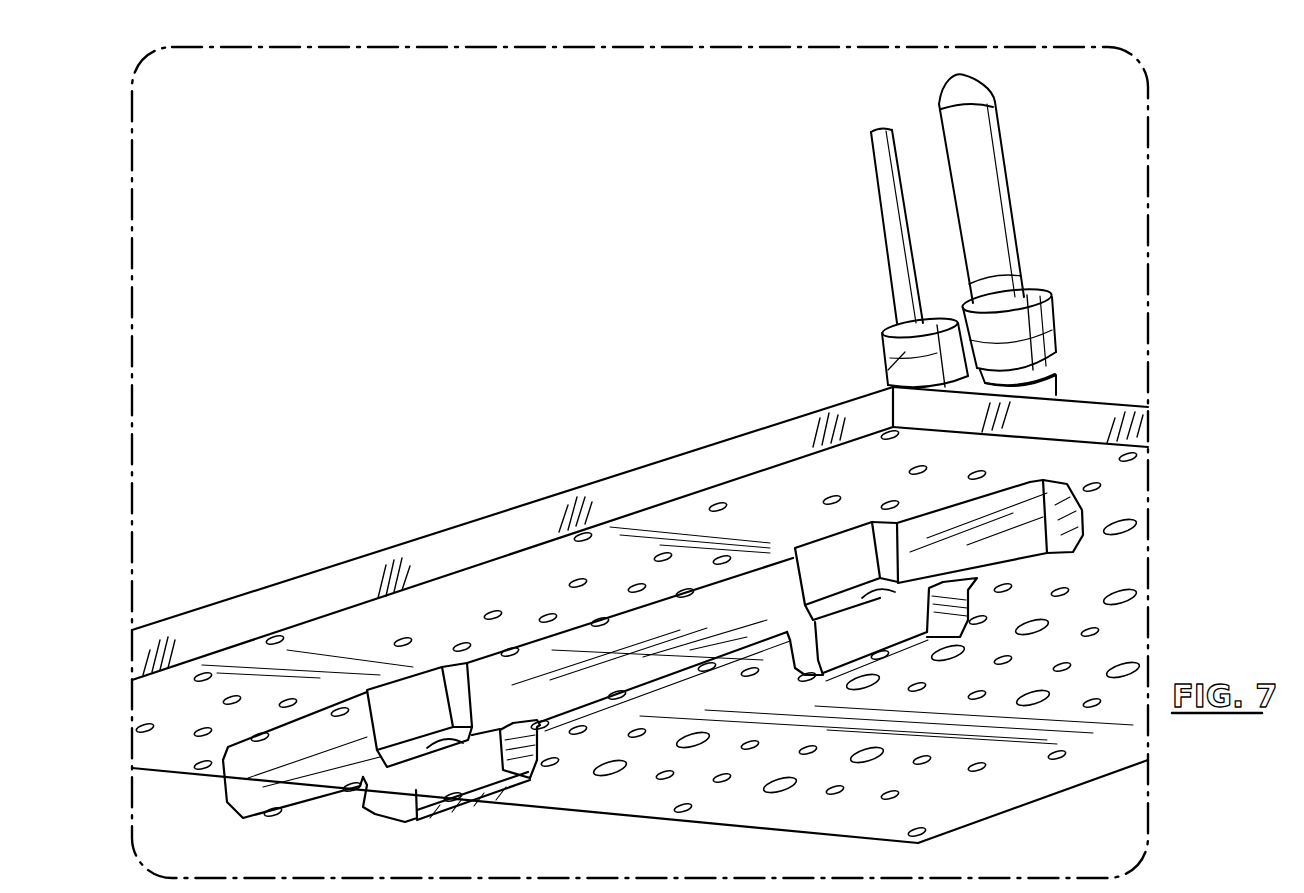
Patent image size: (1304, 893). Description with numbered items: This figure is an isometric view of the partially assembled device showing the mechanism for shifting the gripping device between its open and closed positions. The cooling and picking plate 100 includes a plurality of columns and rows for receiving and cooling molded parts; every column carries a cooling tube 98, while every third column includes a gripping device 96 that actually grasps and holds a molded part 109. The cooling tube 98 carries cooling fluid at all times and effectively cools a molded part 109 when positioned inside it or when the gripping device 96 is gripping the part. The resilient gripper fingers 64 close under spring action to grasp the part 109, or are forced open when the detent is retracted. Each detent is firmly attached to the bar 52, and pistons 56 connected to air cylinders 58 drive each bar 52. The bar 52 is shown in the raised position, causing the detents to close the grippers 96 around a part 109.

The plate 100 is at (530, 518).
The cooling tube 98 is at (886, 172).
The molded part 109 is at (985, 165).
The gripper fingers 64 is at (905, 357).
The gripping device 96 is at (1030, 318).
The bar 52 is at (388, 790).
The air cylinder 58 is at (426, 725).
The piston 56 is at (450, 745).